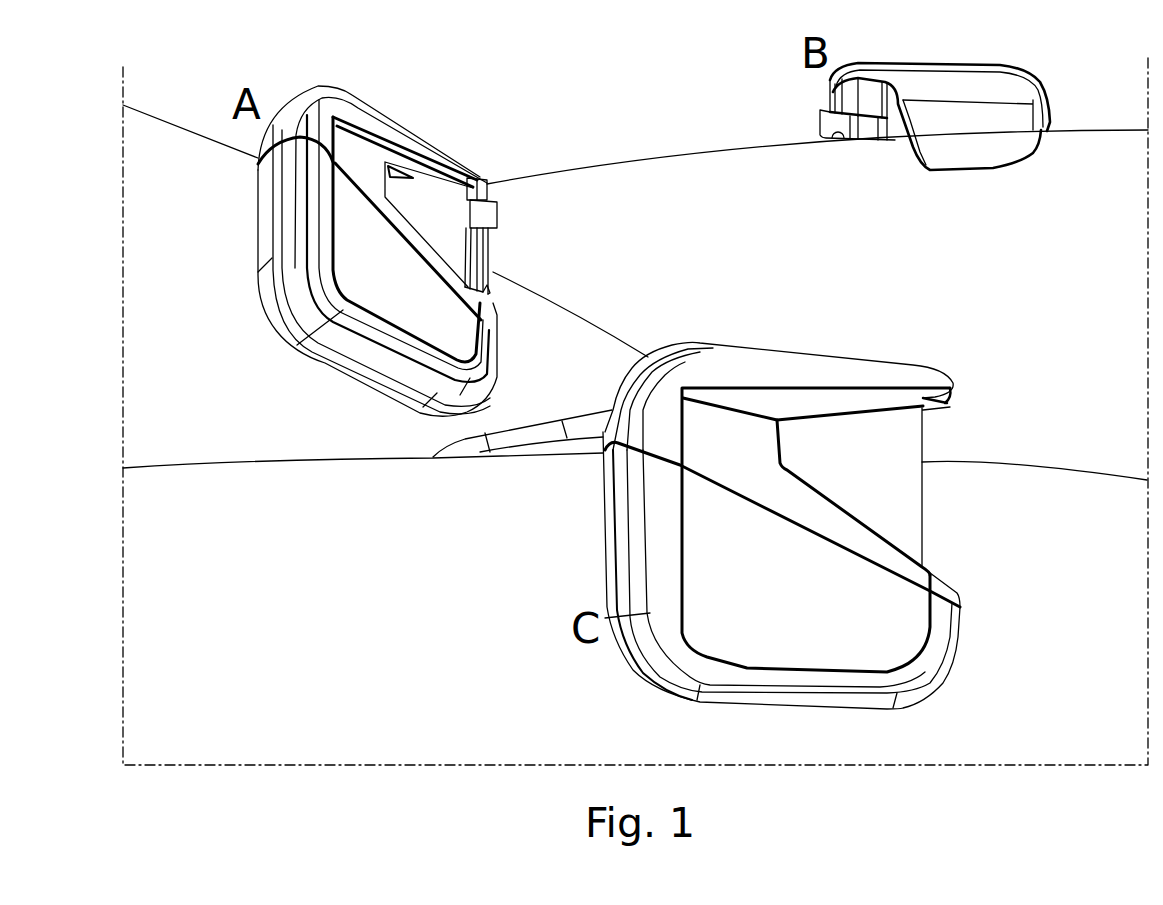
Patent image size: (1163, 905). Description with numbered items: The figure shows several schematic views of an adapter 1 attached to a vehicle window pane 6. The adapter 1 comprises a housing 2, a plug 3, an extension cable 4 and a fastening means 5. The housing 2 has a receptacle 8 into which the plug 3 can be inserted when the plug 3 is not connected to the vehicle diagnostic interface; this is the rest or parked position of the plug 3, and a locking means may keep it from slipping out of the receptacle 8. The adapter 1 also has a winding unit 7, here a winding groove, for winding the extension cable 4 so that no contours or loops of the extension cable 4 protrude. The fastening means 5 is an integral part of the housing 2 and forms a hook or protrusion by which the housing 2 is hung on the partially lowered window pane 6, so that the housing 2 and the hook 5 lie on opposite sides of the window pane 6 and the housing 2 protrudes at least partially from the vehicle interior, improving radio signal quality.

The adapter 1 is at (691, 366).
The housing 2 is at (356, 97).
The plug 3 is at (499, 242).
The extension cable 4 is at (535, 426).
The fastening means 5 is at (1000, 167).
The window pane 6 is at (640, 163).
The winding unit 7 is at (377, 370).
The receptacle 8 is at (489, 305).